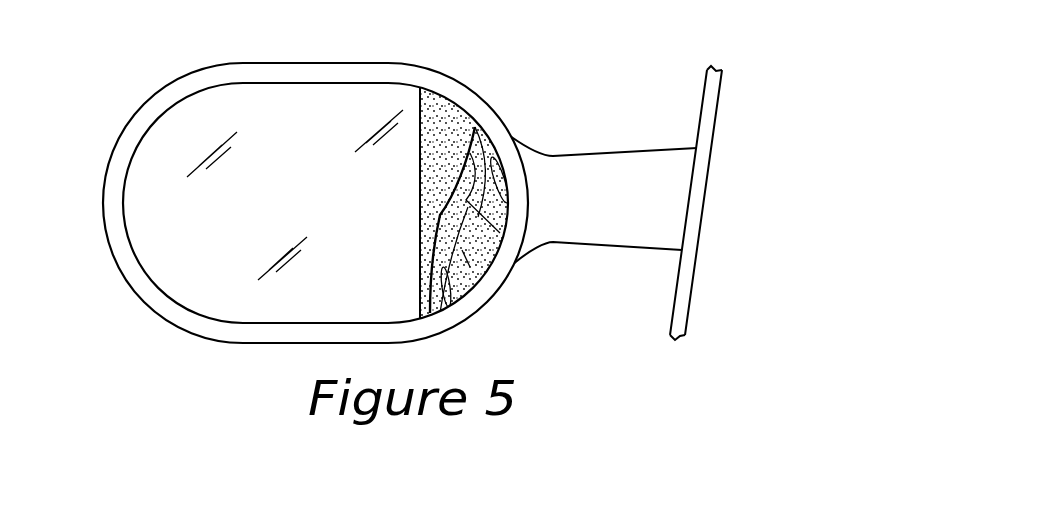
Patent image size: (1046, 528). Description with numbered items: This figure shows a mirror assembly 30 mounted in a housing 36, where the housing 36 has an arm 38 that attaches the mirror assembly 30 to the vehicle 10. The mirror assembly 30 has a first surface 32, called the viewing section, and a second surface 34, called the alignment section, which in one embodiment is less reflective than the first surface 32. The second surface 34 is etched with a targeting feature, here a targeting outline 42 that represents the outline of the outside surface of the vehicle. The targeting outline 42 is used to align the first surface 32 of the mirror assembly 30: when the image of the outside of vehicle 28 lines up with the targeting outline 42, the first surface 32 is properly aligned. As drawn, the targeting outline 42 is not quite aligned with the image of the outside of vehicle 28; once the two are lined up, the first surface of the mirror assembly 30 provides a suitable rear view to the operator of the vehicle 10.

The mirror assembly 30 is at (535, 72).
The vehicle 10 is at (709, 102).
The arm 38 is at (610, 172).
The housing 36 is at (117, 230).
The first surface 32 is at (332, 122).
The second surface 34 is at (450, 117).
The targeting outline 42 is at (420, 212).
The image of the outside of vehicle 28 is at (470, 267).